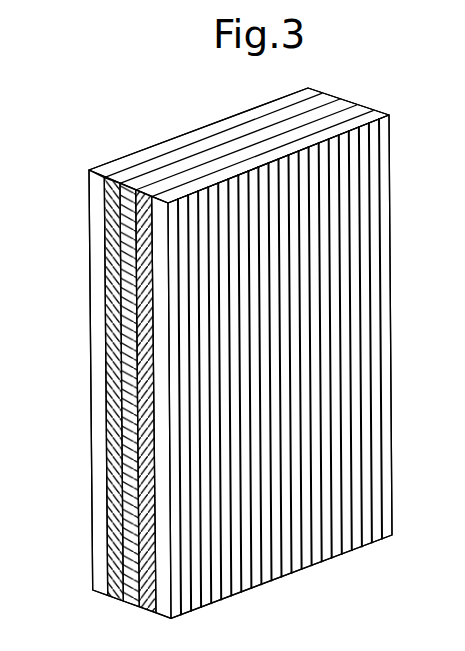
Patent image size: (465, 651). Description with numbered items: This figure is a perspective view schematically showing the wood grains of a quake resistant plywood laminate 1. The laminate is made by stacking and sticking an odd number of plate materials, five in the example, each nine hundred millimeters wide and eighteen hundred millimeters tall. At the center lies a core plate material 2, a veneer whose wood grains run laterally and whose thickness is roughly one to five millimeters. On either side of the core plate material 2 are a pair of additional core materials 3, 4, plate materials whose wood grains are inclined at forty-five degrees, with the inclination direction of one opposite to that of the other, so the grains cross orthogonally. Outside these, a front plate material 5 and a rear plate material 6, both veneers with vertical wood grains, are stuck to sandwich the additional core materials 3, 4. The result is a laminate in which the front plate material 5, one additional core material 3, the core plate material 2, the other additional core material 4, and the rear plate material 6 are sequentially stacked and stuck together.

The quake resistant plywood laminate 1 is at (403, 170).
The core plate material 2 is at (173, 168).
The additional core material 3 is at (147, 572).
The additional core material 4 is at (113, 497).
The front plate material 5 is at (333, 248).
The rear plate material 6 is at (98, 290).